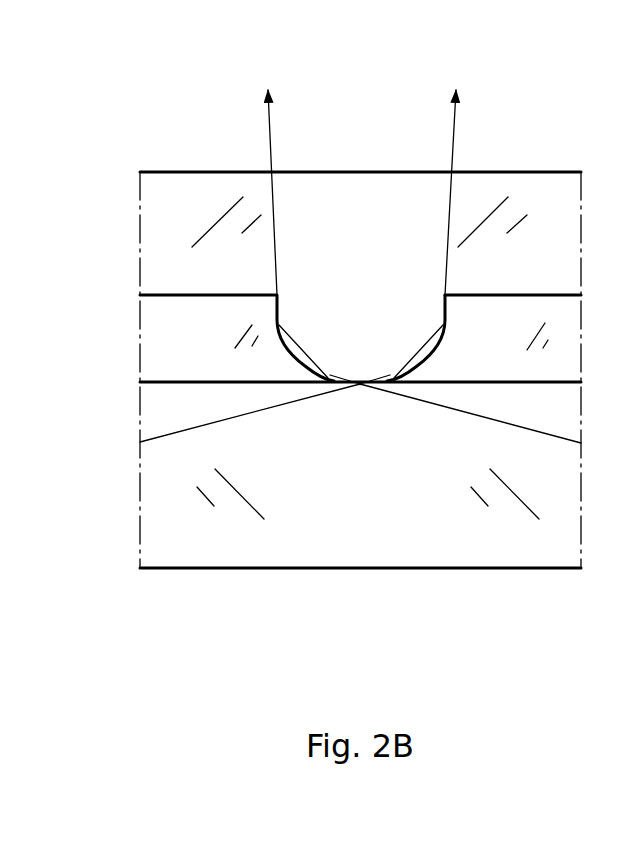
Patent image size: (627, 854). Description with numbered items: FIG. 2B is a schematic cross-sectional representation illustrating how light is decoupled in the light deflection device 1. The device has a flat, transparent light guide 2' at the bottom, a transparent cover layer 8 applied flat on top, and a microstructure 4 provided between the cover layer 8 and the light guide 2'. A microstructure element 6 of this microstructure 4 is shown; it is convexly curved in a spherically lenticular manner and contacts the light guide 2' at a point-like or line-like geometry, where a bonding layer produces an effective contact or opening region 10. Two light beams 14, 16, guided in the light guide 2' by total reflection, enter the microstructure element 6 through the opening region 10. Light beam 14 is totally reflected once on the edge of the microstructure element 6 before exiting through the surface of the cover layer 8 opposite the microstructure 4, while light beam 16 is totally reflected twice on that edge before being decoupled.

The light deflection device 1 is at (157, 102).
The light guide 2' is at (360, 553).
The microstructure 4 is at (190, 342).
The microstructure element 6 is at (435, 347).
The cover layer 8 is at (550, 190).
The opening region 10 is at (367, 403).
The light beam 14 is at (268, 118).
The light beam 16 is at (455, 118).